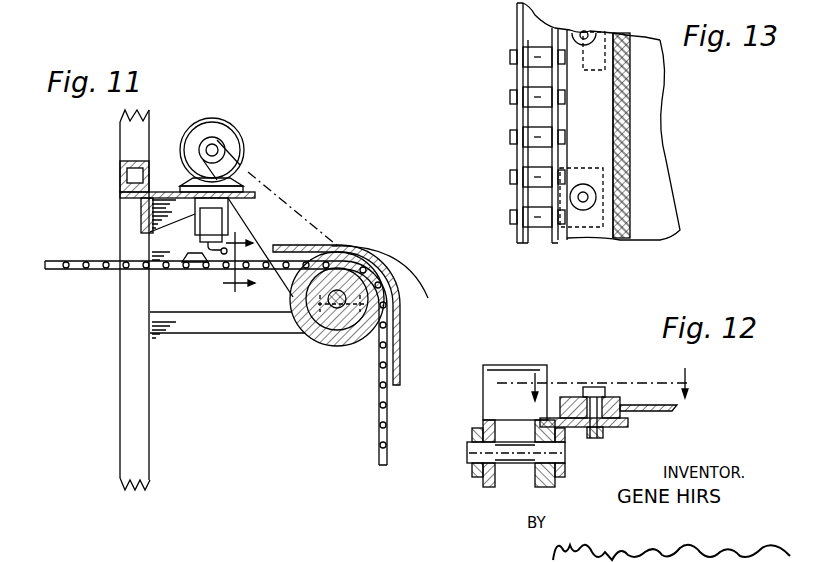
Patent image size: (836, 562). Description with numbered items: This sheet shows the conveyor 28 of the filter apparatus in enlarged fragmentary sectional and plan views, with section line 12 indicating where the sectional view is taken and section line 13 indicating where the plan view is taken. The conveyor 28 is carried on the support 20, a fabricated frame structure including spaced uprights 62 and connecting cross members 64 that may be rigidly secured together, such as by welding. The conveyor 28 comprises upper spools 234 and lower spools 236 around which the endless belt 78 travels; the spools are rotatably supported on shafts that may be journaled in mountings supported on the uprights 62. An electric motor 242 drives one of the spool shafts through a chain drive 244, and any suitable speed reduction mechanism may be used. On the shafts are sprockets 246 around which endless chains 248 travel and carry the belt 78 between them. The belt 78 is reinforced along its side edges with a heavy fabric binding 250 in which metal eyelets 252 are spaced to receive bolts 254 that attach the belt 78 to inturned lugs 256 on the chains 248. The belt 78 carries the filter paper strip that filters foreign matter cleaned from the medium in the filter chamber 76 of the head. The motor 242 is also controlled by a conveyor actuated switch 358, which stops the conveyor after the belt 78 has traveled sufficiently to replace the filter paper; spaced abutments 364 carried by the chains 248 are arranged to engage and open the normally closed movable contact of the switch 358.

In FIG. 11, the support 20 is at (150, 427).
In FIG. 13, the conveyor 28 is at (696, 127).
In FIG. 11, the uprights 62 is at (120, 374).
In FIG. 11, the cross members 64 is at (120, 164).
In FIG. 11, the filter chamber 76 is at (406, 263).
In FIG. 11, the conveyor belt 78 is at (400, 333).
In FIG. 13, the conveyor belt 78 is at (667, 189).
In FIG. 12, the conveyor belt 78 is at (656, 410).
In FIG. 11, the upper spools 234 is at (342, 346).
In FIG. 11, the lower spools 236 is at (340, 304).
In FIG. 11, the electric motor 242 is at (231, 137).
In FIG. 11, the chain drive 244 is at (297, 200).
In FIG. 11, the sprockets 246 is at (308, 339).
In FIG. 11, the endless chains 248 is at (80, 271).
In FIG. 13, the endless chains 248 is at (523, 78).
In FIG. 12, the endless chains 248 is at (485, 488).
In FIG. 13, the fabric binding 250 is at (600, 147).
In FIG. 12, the metal eyelets 252 is at (620, 402).
In FIG. 13, the bolts 254 is at (588, 184).
In FIG. 12, the bolts 254 is at (592, 386).
In FIG. 13, the inturned lugs 256 is at (592, 72).
In FIG. 12, the inturned lugs 256 is at (622, 430).
In FIG. 11, the conveyor actuated switch 358 is at (213, 223).
In FIG. 11, the abutments 364 is at (196, 267).
In FIG. 11, the section line 12- 12 is at (239, 265).
In FIG. 12, the section line 13- 13 is at (609, 384).